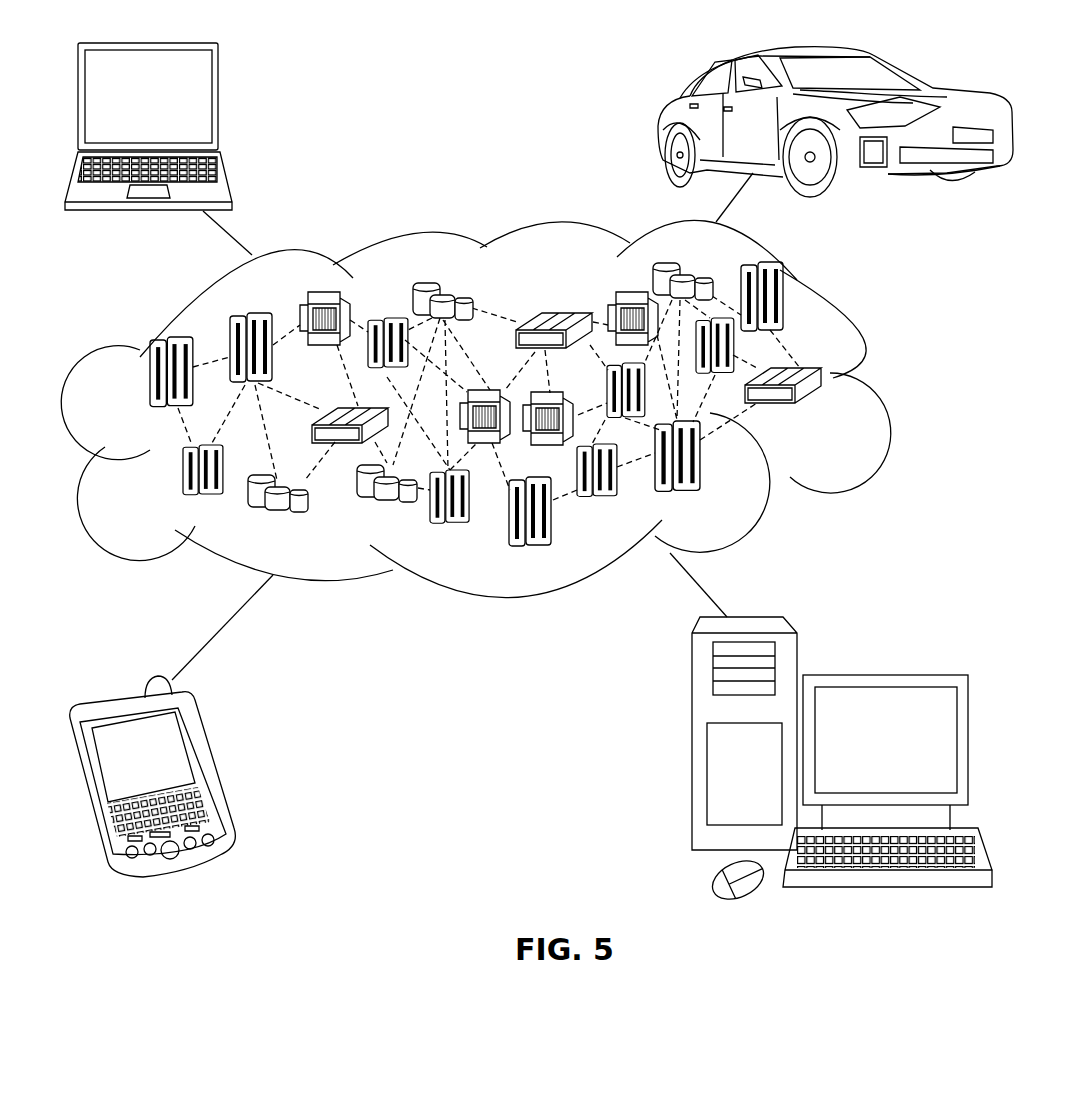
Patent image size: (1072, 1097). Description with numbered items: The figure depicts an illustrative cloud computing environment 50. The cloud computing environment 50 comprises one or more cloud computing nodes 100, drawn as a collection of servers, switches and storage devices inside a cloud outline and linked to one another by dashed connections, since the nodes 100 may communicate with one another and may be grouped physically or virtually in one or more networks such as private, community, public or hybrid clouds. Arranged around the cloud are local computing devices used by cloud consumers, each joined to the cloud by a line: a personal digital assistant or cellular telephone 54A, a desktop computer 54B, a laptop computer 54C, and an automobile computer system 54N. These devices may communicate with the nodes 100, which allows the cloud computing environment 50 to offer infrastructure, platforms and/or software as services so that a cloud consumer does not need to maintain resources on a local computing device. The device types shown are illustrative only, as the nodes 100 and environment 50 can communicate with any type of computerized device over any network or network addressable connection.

The cloud computing environment 50 is at (880, 383).
The cloud computing nodes 100 is at (828, 414).
The personal digital assistant or cellular telephone 54A is at (205, 770).
The desktop computer 54B is at (881, 676).
The laptop computer 54C is at (219, 108).
The automobile computer system 54N is at (660, 126).